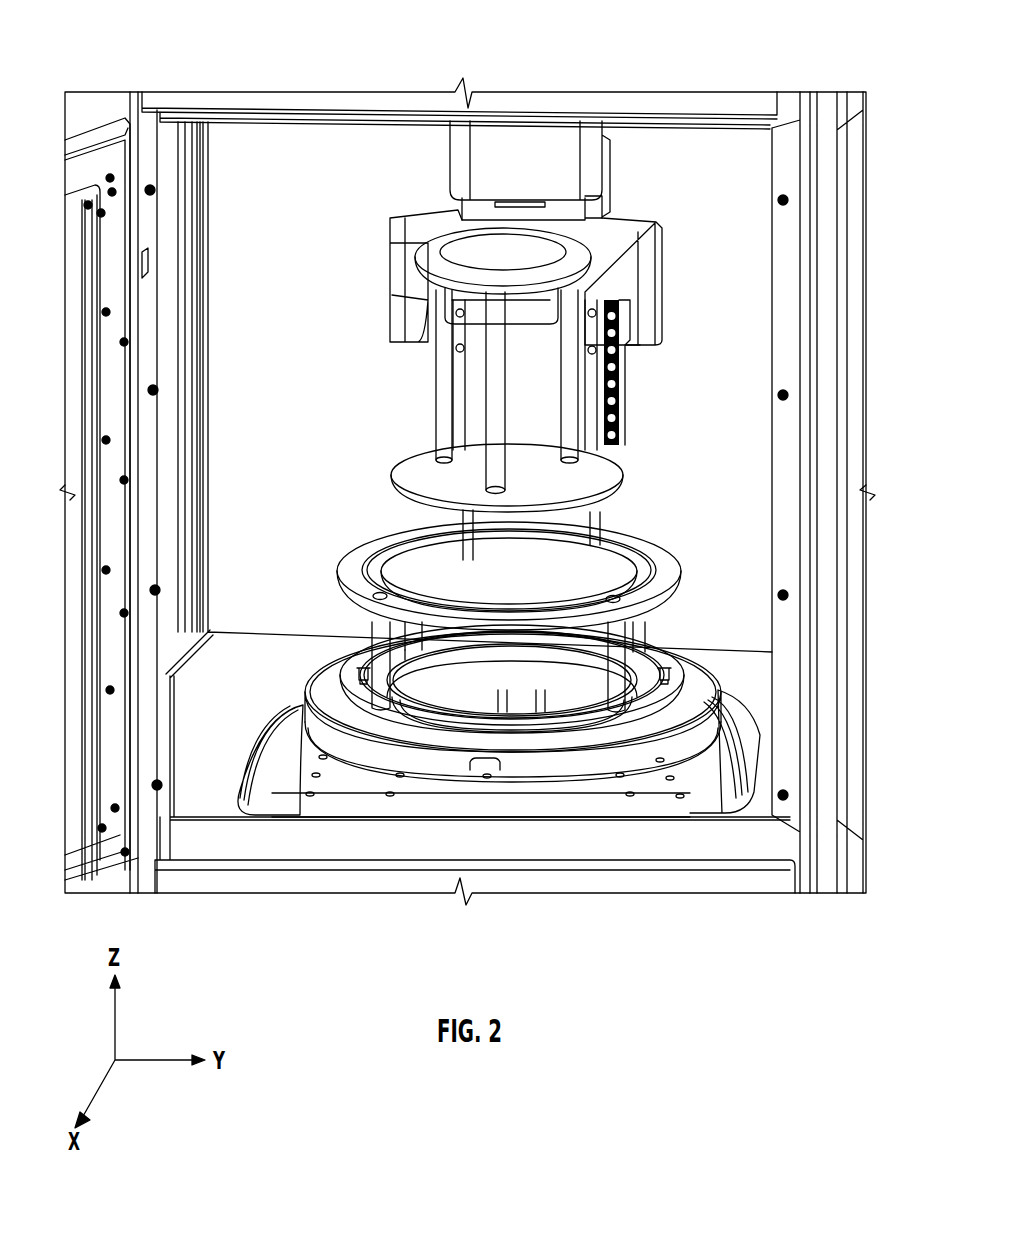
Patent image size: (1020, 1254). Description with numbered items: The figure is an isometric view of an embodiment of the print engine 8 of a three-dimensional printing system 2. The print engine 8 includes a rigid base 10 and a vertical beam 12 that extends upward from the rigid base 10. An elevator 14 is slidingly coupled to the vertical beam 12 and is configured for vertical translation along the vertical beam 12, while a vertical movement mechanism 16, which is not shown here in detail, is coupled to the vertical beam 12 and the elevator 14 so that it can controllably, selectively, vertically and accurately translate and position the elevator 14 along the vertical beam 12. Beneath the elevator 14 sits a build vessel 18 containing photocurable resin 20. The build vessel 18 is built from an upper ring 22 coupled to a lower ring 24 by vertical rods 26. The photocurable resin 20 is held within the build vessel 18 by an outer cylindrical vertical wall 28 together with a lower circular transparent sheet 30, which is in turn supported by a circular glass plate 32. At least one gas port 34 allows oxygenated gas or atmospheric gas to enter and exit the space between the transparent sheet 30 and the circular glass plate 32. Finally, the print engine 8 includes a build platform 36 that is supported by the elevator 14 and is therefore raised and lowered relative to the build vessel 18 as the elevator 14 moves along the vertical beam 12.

The 3D printing system 2 is at (607, 47).
The print engine 8 is at (670, 160).
The rigid base 10 is at (675, 780).
The vertical beam 12 is at (530, 160).
The elevator 14 is at (625, 272).
The vertical movement mechanism 16 is at (540, 423).
The build vessel 18 is at (708, 610).
The photocurable resin 20 is at (413, 660).
The upper ring 22 is at (352, 575).
The lower ring 24 is at (448, 740).
The vertical rods 26 is at (615, 707).
The outer cylindrical vertical wall 28 is at (440, 705).
The lower circular transparent sheet 30 is at (483, 708).
The circular glass plate 32 is at (512, 680).
The gas port 34 is at (357, 680).
The build platform 36 is at (445, 410).